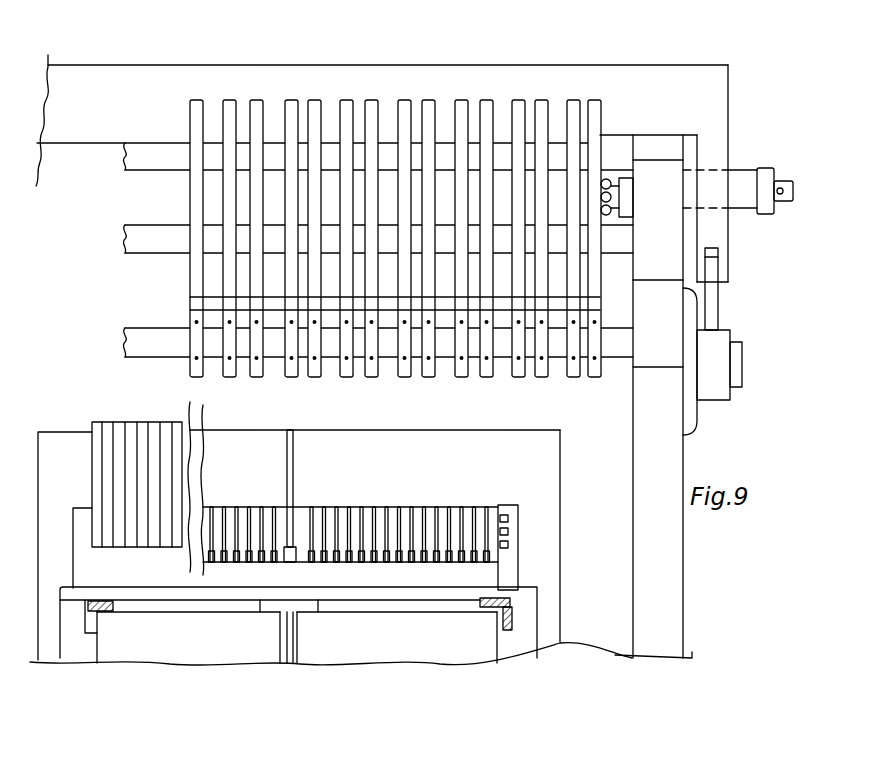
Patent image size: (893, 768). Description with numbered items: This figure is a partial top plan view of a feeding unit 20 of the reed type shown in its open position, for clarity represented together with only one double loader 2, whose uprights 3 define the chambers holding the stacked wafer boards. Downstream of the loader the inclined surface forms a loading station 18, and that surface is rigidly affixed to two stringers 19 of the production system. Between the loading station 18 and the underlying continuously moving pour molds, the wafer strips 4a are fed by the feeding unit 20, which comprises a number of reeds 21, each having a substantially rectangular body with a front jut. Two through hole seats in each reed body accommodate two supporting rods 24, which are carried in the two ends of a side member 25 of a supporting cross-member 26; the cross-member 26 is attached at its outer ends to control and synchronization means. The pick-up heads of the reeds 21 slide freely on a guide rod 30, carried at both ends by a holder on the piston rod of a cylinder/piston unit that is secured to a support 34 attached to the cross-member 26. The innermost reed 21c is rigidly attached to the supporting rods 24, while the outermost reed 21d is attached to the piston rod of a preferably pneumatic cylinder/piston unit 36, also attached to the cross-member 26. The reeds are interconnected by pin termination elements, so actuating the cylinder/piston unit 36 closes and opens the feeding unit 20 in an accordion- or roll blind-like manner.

The double loader 2 is at (481, 642).
The uprights 3 is at (520, 590).
The wafer strips 4a is at (155, 430).
The loading station 18 is at (523, 437).
The stringers 19 is at (668, 628).
The feeding unit 20 is at (414, 203).
The reeds 21 is at (347, 105).
The innermost reed 21c is at (196, 110).
The outermost reed 21d is at (597, 108).
The supporting rods 24 is at (162, 157).
The side member 25 is at (660, 148).
The supporting cross-member 26 is at (670, 82).
The guide rod 30 is at (147, 345).
The support 34 is at (670, 232).
The cylinder/piston unit 36 is at (742, 178).